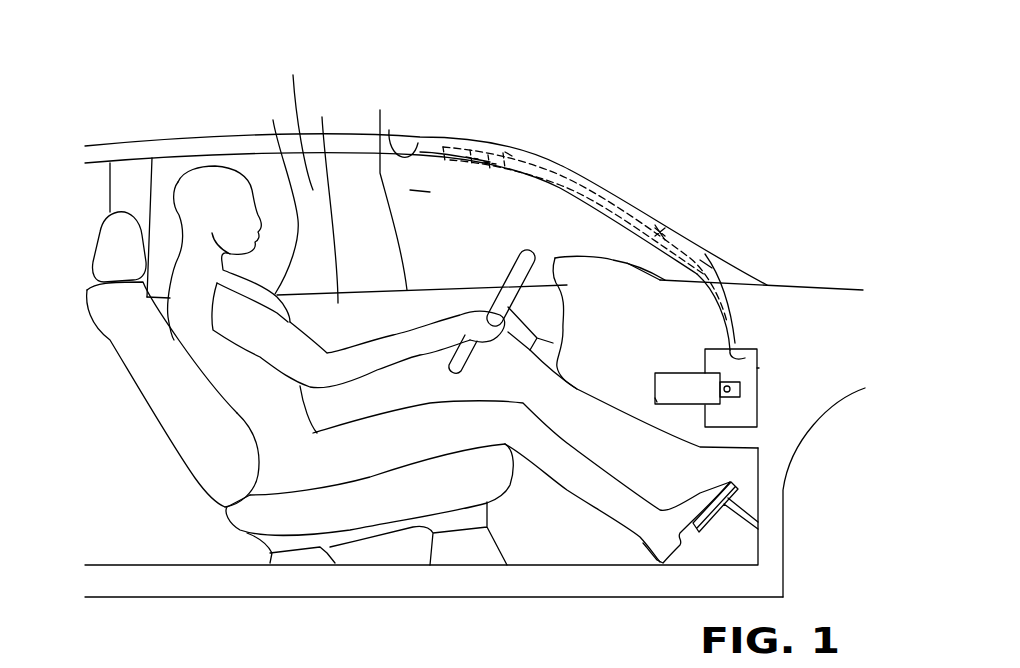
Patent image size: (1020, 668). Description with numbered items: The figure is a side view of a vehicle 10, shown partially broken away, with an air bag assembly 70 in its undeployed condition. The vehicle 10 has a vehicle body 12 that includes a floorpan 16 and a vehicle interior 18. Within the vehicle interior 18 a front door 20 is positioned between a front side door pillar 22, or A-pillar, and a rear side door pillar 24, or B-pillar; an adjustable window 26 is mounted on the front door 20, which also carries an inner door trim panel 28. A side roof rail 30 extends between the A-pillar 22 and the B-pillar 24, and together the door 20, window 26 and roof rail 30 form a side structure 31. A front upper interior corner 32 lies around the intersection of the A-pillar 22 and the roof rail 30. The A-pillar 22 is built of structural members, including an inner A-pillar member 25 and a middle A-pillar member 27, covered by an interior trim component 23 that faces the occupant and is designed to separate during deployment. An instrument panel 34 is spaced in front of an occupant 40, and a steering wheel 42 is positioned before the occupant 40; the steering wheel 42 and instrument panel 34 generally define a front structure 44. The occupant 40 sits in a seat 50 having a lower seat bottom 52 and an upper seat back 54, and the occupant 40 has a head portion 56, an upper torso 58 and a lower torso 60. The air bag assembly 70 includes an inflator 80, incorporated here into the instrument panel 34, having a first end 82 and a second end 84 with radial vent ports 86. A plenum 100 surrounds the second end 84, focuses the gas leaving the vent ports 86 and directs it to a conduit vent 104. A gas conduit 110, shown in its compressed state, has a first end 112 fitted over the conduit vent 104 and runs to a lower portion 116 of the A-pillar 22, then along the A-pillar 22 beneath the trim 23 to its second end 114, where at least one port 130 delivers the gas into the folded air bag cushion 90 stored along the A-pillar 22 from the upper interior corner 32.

The vehicle 10 is at (855, 277).
The vehicle body 12 is at (798, 488).
The floorpan 16 is at (722, 563).
The vehicle interior 18 is at (425, 165).
The front door 20 is at (323, 197).
The front side door pillar (A-pillar) 22 is at (600, 252).
The interior trim component 23 is at (389, 130).
The rear side door pillar (B-pillar) 24 is at (110, 168).
The inner A-pillar member 25 is at (418, 186).
The adjustable window 26 is at (297, 121).
The middle A-pillar member 27 is at (724, 270).
The inner door trim panel 28 is at (387, 187).
The side roof rail 30 is at (212, 138).
The side structure 31 is at (352, 134).
The front upper interior corner 32 is at (482, 134).
The instrument panel 34 is at (618, 268).
The occupant 40 is at (248, 168).
The steering wheel 42 is at (533, 263).
The front structure 44 is at (573, 394).
The seat 50 is at (120, 361).
The lower seat bottom 52 is at (253, 527).
The upper seat back 54 is at (153, 383).
The head portion 56 is at (187, 170).
The upper torso 58 is at (279, 195).
The lower torso 60 is at (258, 407).
The air bag assembly 70 is at (762, 333).
The inflator 80 is at (680, 393).
The first end of inflator 82 is at (655, 382).
The second end of inflator 84 is at (740, 385).
The vent ports 86 is at (740, 391).
The air bag cushion 90 is at (546, 177).
The plenum 100 is at (757, 368).
The conduit vent 104 is at (745, 350).
The gas conduit 110 is at (680, 203).
The first end of gas conduit 112 is at (738, 336).
The second end of gas conduit 114 is at (505, 152).
The lower portion of A-pillar 116 is at (706, 257).
The port 130 is at (497, 158).